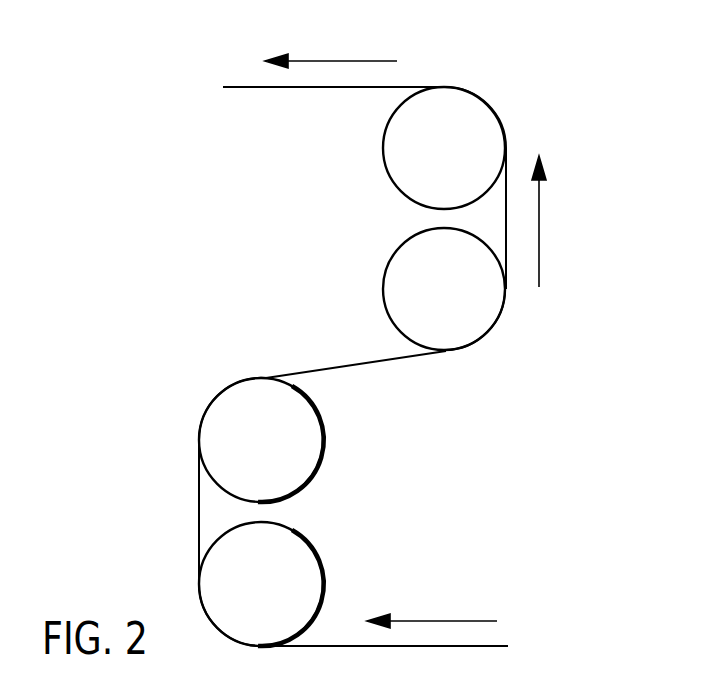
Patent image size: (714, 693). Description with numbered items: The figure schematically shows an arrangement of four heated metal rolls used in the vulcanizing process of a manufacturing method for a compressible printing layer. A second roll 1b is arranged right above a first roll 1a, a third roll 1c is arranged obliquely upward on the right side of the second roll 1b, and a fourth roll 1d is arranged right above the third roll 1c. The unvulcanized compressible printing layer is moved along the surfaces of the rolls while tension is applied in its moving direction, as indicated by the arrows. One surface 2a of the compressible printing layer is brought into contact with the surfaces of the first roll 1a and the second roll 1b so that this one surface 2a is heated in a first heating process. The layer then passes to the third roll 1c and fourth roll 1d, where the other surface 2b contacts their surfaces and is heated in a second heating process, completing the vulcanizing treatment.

The first roll 1a is at (323, 589).
The second roll 1b is at (323, 438).
The third roll 1c is at (383, 292).
The fourth roll 1d is at (383, 148).
The one surface of the compressible printing layer 2a is at (199, 508).
The other surface of the compressible printing layer 2b is at (505, 221).